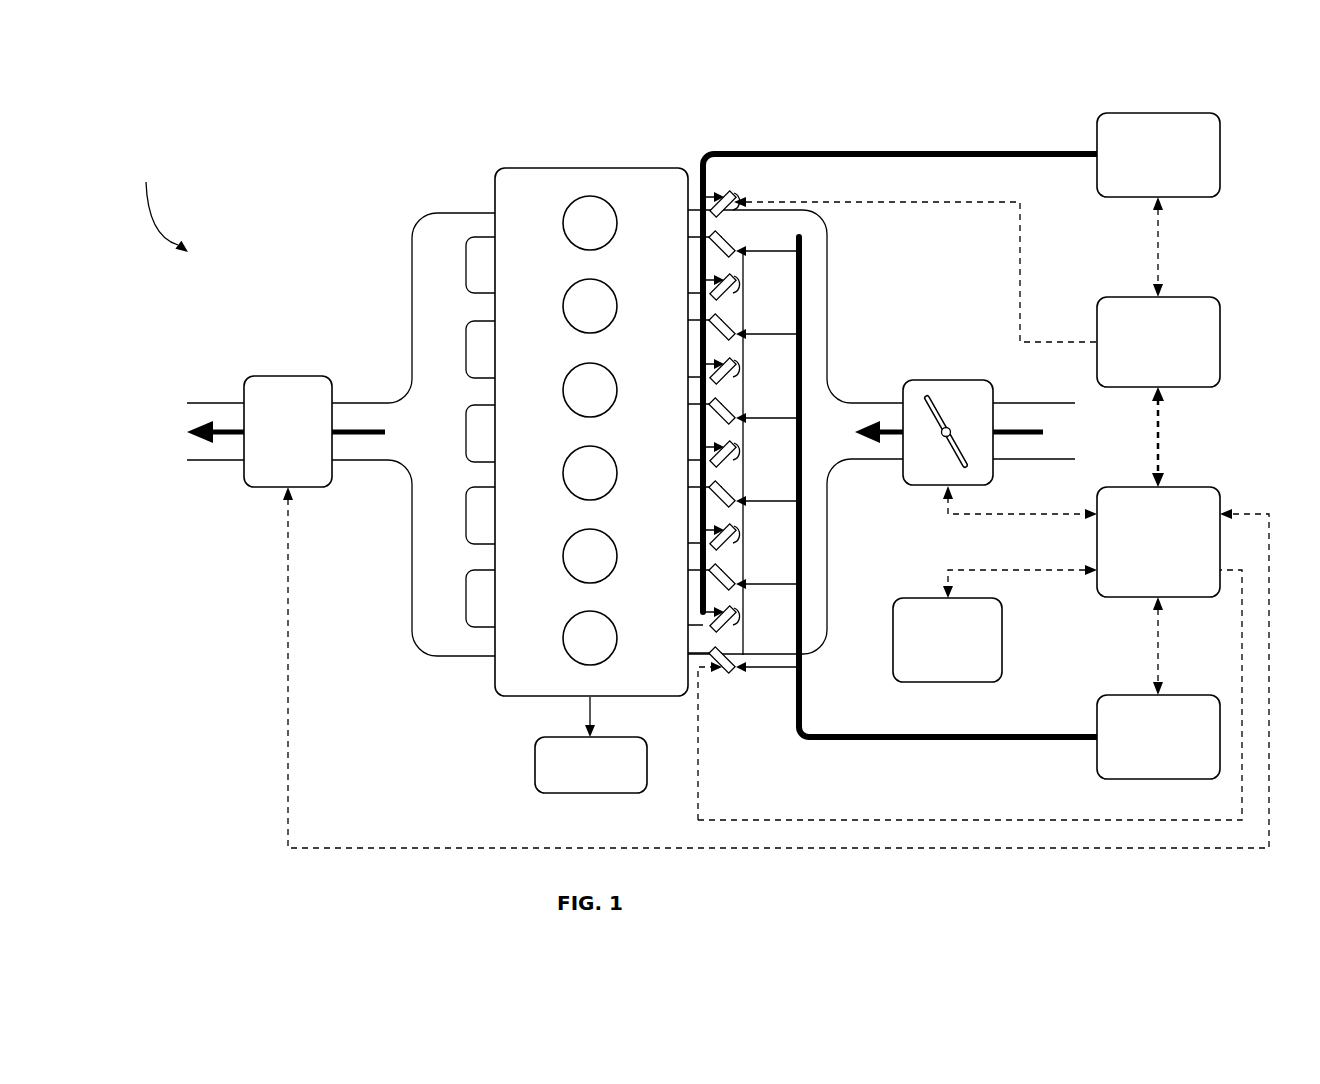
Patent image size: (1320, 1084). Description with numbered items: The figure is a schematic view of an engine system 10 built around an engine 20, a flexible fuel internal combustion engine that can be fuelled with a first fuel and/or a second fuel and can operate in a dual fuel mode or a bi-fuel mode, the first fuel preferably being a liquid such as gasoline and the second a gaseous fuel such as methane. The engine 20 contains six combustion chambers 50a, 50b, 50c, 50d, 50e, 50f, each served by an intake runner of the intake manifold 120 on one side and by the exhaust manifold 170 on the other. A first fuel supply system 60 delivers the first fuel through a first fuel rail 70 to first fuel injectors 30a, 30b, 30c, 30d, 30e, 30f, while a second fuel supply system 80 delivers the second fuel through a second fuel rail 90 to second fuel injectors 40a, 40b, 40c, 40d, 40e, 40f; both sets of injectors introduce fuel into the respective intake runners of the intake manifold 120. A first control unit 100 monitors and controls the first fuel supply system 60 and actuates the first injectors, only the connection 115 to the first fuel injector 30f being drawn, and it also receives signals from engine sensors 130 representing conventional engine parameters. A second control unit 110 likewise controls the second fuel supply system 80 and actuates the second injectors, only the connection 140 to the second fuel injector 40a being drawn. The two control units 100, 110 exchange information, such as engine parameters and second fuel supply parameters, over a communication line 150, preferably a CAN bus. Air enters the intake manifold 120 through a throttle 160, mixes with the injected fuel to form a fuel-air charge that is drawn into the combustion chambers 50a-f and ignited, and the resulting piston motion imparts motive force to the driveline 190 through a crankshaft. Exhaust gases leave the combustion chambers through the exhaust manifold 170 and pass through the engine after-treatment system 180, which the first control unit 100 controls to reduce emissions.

The engine system 10 is at (161, 201).
The engine 20 is at (592, 167).
The first fuel injector 30a is at (734, 241).
The first fuel injector 30b is at (734, 324).
The first fuel injector 30c is at (734, 408).
The first fuel injector 30d is at (734, 491).
The first fuel injector 30e is at (734, 574).
The first fuel injector 30f is at (734, 652).
The second fuel injector 40a is at (741, 196).
The second fuel injector 40b is at (741, 279).
The second fuel injector 40c is at (741, 363).
The second fuel injector 40d is at (741, 446).
The second fuel injector 40e is at (741, 529).
The second fuel injector 40f is at (741, 611).
The combustion chamber 50a is at (590, 223).
The combustion chamber 50b is at (590, 306).
The combustion chamber 50c is at (590, 390).
The combustion chamber 50d is at (590, 473).
The combustion chamber 50e is at (590, 556).
The combustion chamber 50f is at (590, 638).
The first fuel supply system 60 is at (1158, 737).
The first fuel rail 70 is at (953, 740).
The second fuel supply system 80 is at (1158, 155).
The second fuel rail 90 is at (957, 154).
The first control unit 100 is at (1158, 542).
The second control unit 110 is at (1158, 342).
The connection 115 is at (790, 820).
The intake manifold 120 is at (827, 258).
The engine sensors 130 is at (947, 640).
The connection 140 is at (1020, 258).
The communication line 150 is at (1164, 438).
The throttle 160 is at (950, 380).
The exhaust manifold 170 is at (410, 260).
The engine after-treatment system 180 is at (286, 431).
The driveline 190 is at (591, 745).